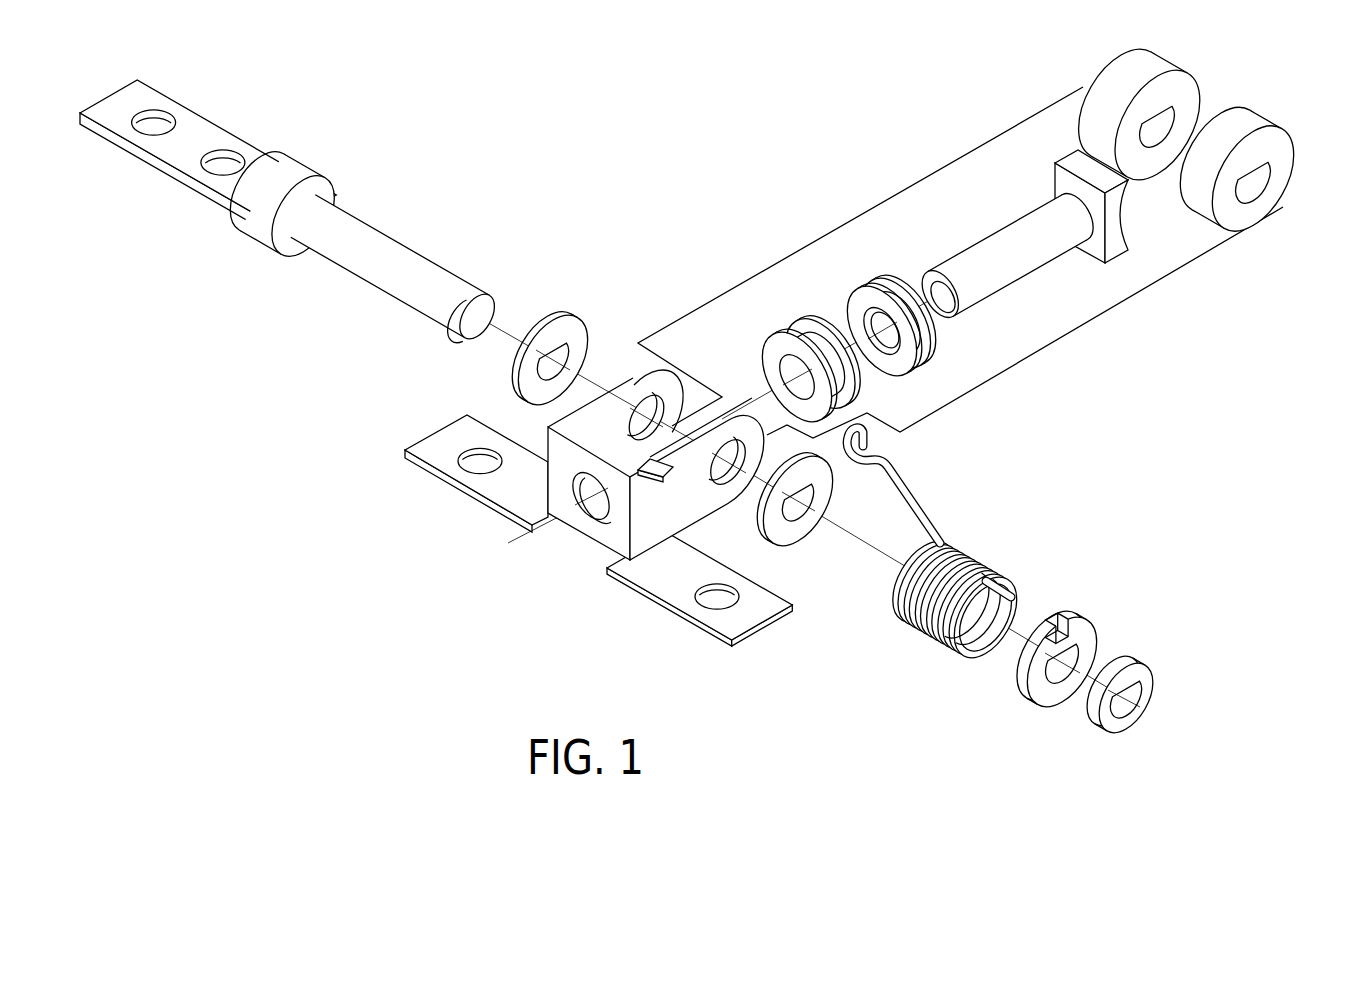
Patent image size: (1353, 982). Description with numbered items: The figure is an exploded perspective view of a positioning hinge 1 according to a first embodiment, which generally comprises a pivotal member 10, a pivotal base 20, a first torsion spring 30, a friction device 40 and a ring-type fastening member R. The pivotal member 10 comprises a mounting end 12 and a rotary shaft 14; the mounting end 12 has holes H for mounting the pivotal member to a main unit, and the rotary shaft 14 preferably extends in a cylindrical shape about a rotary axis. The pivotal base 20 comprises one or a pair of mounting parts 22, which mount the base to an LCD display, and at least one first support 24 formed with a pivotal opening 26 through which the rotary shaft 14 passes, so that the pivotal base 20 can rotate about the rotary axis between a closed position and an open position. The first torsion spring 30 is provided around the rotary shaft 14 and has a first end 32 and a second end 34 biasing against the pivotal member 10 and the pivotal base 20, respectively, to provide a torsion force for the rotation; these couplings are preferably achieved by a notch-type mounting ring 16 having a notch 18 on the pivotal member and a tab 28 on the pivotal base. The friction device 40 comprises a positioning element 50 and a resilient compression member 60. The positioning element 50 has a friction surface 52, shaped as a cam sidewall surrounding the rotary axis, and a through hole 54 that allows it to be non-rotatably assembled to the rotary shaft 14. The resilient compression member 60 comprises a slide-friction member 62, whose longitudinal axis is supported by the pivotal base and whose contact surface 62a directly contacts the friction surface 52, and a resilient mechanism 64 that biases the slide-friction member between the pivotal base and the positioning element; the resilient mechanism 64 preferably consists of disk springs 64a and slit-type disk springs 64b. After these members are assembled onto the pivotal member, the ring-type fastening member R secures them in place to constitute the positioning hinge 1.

The positioning hinge 1 is at (240, 412).
The pivotal member 10 is at (219, 272).
The mounting end 12 is at (214, 120).
The holes H is at (160, 118).
The rotary shaft 14 is at (386, 232).
The pivotal base 20 is at (491, 578).
The mounting part 22 is at (432, 455).
The first support 24 is at (680, 381).
The pivotal opening 26 is at (650, 400).
The tab 28 is at (607, 541).
The first torsion spring 30 is at (980, 555).
The first end 32 is at (1010, 598).
The second end 34 is at (858, 485).
The notch-type mounting ring 16 is at (1097, 648).
The notch 18 is at (1065, 618).
The ring-type fastening member R is at (1156, 680).
The friction device 40 is at (1046, 2).
The resilient compression member 60 is at (909, 457).
The slide-friction member 62 is at (1023, 279).
The contact surface 62a is at (1122, 213).
The resilient mechanism 64 is at (822, 191).
The disk springs 64a is at (850, 300).
The slit-type disk springs 64b is at (772, 347).
The positioning element 50 is at (1167, 21).
The friction surface 52 is at (1118, 72).
The through hole 54 is at (1258, 189).